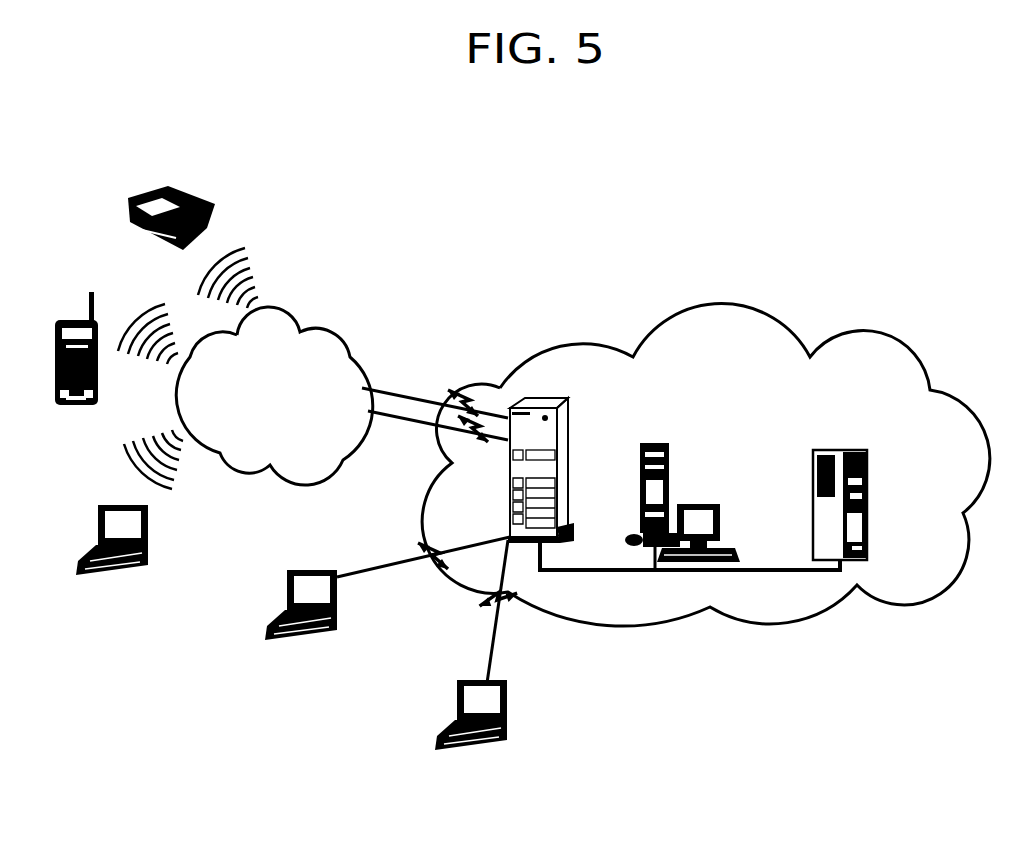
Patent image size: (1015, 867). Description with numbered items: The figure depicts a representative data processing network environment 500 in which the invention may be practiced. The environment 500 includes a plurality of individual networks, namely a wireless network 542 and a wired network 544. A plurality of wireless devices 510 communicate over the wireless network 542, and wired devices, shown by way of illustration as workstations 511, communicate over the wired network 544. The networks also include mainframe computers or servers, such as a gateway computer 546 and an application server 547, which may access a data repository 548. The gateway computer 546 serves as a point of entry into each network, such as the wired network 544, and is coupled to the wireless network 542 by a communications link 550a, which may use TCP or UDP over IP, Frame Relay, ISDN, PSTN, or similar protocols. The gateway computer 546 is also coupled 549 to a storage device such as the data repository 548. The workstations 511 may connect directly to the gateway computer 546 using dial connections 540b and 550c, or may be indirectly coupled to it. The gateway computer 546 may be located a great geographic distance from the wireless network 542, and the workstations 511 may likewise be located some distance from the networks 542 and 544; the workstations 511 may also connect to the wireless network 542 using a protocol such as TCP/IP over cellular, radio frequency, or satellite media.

The data processing network environment 500 is at (560, 135).
The wireless devices 510 is at (152, 416).
The workstations 511 is at (383, 680).
The wireless network 542 is at (274, 394).
The wired network 544 is at (706, 450).
The gateway computer 546 is at (572, 453).
The application server 547 is at (682, 492).
The data repository 548 is at (865, 505).
The coupling to storage device 549 is at (690, 570).
The communications link 550a is at (435, 383).
The wired connection 540b is at (423, 553).
The dial connection 550c is at (460, 611).